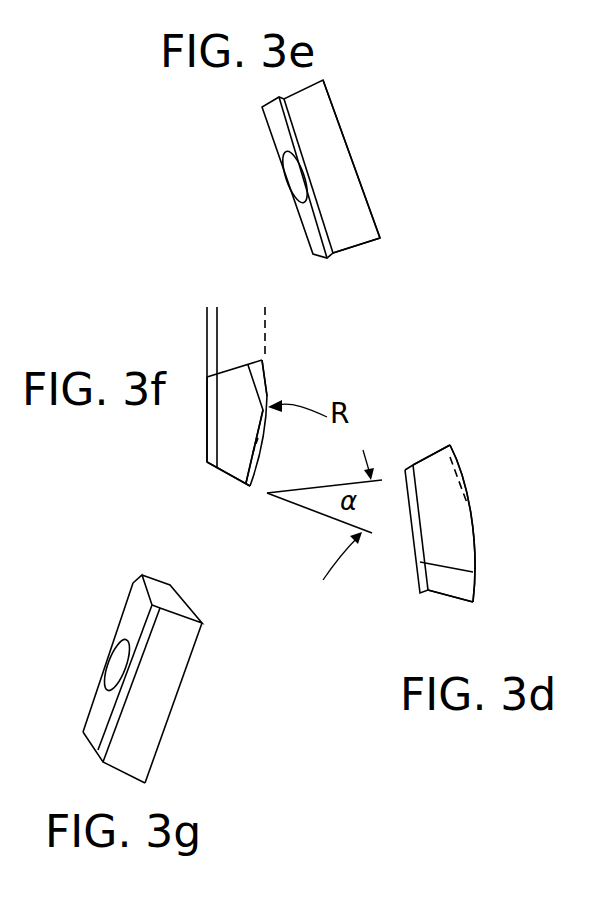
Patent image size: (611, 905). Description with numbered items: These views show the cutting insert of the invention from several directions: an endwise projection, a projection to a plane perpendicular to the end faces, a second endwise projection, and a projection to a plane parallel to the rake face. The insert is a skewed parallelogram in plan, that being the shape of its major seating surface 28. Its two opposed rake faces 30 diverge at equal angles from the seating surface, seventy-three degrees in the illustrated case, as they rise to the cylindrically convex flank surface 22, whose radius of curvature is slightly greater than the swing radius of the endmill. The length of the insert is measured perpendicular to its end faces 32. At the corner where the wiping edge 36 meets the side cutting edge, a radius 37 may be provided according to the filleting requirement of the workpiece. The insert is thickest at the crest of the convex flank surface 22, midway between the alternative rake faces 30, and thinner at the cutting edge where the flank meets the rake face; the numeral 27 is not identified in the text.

In FIG. 3d, the cylindrically convex flank surface 22 is at (480, 563).
In FIG. 3f, the cutting edge 27 is at (263, 447).
In FIG. 3e, the major seating surface 28 is at (310, 222).
In FIG. 3e, the rake face 30 is at (327, 167).
In FIG. 3f, the rake face 30 is at (235, 361).
In FIG. 3d, the rake face 30 is at (457, 583).
In FIG. 3g, the rake face 30 is at (147, 723).
In FIG. 3f, the end face 32 is at (228, 456).
In FIG. 3d, the end face 32 is at (453, 540).
In FIG. 3e, the wiping edge 36 is at (355, 252).
In FIG. 3d, the wiping edge 36 is at (443, 455).
In FIG. 3e, the radius 37 is at (387, 240).
In FIG. 3f, the radius 37 is at (262, 398).
In FIG. 3d, the radius 37 is at (452, 457).